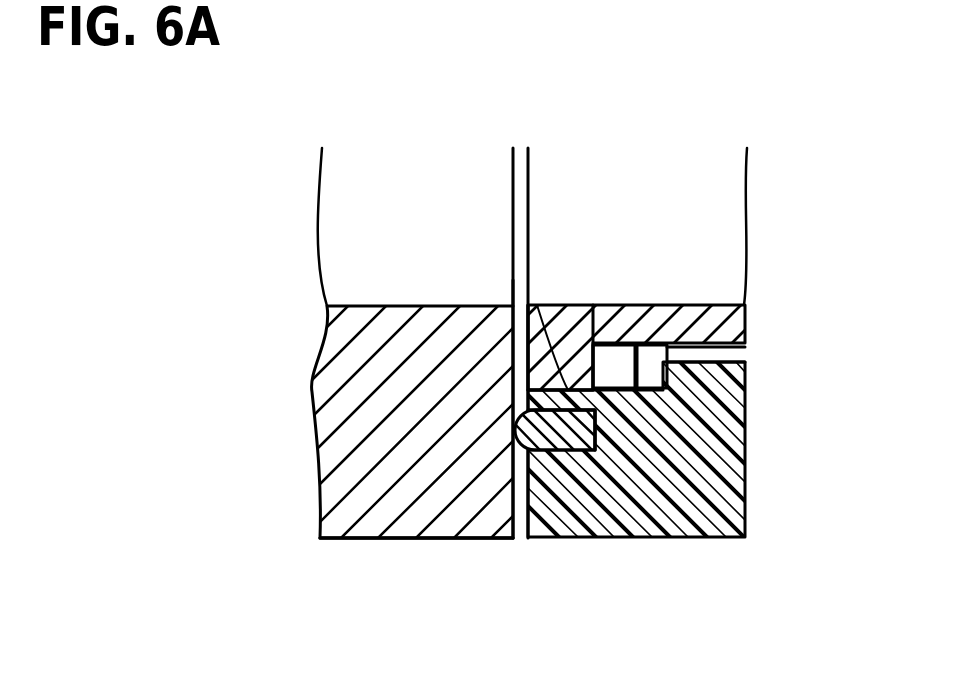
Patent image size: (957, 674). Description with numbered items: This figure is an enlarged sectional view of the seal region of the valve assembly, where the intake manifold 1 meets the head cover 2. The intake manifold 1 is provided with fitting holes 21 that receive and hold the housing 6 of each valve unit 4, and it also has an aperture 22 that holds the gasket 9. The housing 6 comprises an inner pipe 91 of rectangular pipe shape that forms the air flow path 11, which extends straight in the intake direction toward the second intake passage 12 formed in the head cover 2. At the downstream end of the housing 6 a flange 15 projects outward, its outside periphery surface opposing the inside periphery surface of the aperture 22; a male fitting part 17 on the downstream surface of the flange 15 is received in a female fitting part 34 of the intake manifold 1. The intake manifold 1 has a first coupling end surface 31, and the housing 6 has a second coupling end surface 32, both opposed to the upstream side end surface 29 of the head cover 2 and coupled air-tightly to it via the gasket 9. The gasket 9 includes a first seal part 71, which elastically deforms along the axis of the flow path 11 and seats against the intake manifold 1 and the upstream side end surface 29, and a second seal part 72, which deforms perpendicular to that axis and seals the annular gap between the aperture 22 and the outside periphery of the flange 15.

The intake manifold 1 is at (733, 540).
The head cover 2 is at (350, 513).
The valve unit 4 is at (521, 362).
The housing 6 is at (678, 305).
The inner pipe 91 is at (678, 305).
The gasket 9 is at (513, 407).
The first seal part 71 is at (450, 457).
The air flow path 11 is at (674, 204).
The second intake passage 12 is at (417, 211).
The flange 15 is at (548, 372).
The male fitting part 17 is at (608, 348).
The fitting hole 21 is at (690, 352).
The aperture 22 is at (513, 294).
The upstream side end surface 29 is at (528, 452).
The first coupling end surface 31 is at (490, 515).
The second coupling end surface 32 is at (513, 335).
The female fitting part 34 is at (646, 352).
The second seal part 72 is at (562, 452).